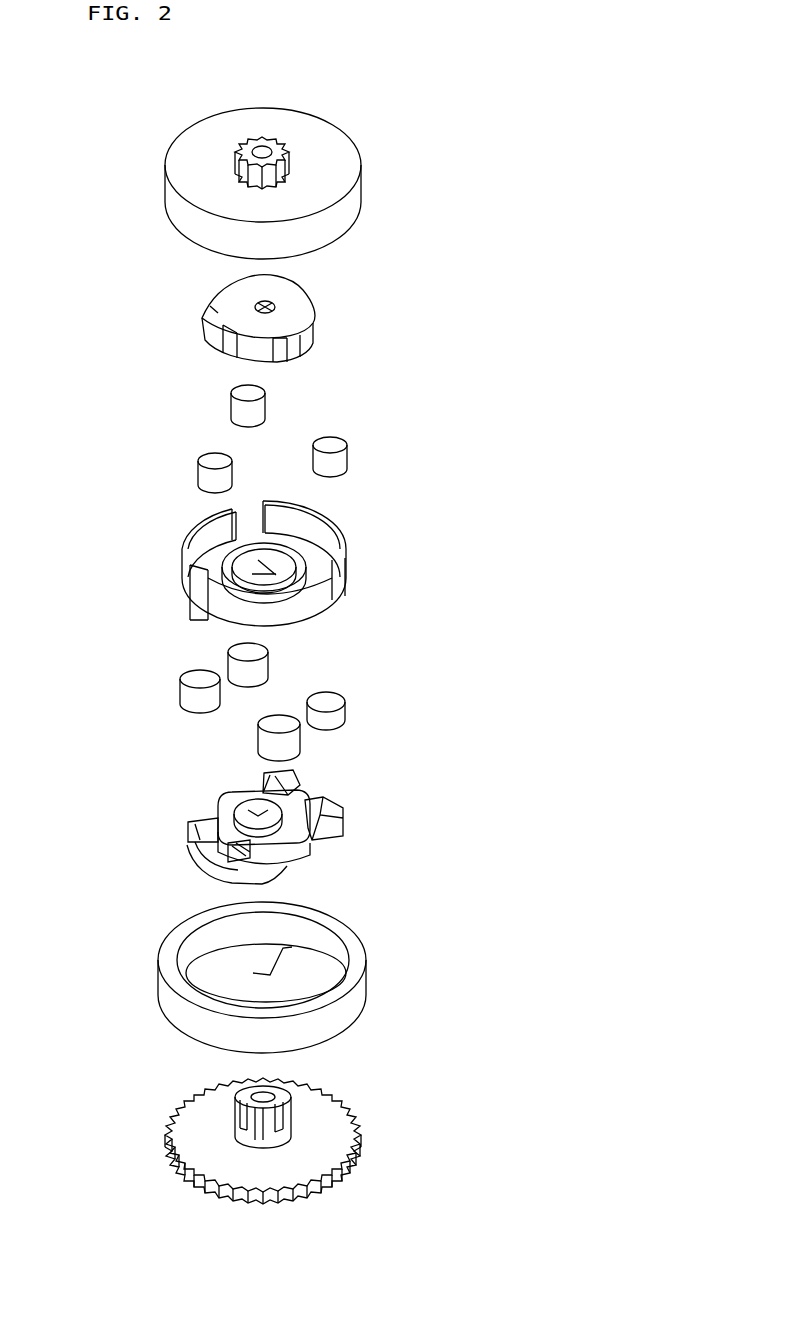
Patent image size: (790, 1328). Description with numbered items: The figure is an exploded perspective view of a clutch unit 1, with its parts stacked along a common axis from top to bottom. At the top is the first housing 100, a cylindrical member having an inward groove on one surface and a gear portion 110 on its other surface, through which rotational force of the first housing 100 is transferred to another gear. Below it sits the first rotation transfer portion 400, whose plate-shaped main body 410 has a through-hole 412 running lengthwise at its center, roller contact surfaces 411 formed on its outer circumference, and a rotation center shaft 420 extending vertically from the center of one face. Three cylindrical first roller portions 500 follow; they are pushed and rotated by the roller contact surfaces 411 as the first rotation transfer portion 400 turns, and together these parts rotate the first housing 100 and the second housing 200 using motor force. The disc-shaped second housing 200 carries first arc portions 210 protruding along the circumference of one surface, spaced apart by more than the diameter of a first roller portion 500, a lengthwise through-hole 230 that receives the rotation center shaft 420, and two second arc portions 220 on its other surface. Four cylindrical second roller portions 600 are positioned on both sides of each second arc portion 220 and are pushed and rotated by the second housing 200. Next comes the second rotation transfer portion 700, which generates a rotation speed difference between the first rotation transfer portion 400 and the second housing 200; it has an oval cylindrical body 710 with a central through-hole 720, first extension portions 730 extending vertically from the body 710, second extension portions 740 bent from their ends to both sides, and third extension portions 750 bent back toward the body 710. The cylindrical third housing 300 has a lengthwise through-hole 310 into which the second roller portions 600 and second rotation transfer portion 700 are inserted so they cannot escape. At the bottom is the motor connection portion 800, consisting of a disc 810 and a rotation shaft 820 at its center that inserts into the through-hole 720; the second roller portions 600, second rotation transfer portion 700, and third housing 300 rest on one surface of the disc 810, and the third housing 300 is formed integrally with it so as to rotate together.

The clutch unit 1 is at (396, 118).
The first housing 100 is at (352, 195).
The gear portion 110 is at (295, 142).
The first rotation transfer portion 400 is at (270, 319).
The main body 410 is at (210, 298).
The roller contact surfaces 411 is at (242, 286).
The through-hole 412 is at (272, 306).
The rotation center shaft 420 is at (232, 350).
The first roller portions 500 is at (322, 453).
The second housing 200 is at (272, 563).
The first arc portions 210 is at (330, 516).
The second arc portions 220 is at (190, 602).
The through-hole 230 is at (192, 578).
The second roller portions 600 is at (343, 712).
The second rotation transfer portion 700 is at (269, 820).
The body 710 is at (300, 840).
The through-hole 720 is at (220, 794).
The first extension portions 730 is at (298, 790).
The second extension portions 740 is at (340, 803).
The third extension portions 750 is at (325, 832).
The third housing 300 is at (297, 977).
The through-hole 310 is at (350, 972).
The motor connection portion 800 is at (306, 1159).
The disc 810 is at (288, 1166).
The rotation shaft 820 is at (288, 1130).